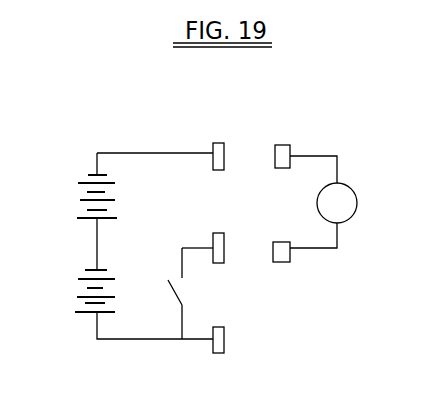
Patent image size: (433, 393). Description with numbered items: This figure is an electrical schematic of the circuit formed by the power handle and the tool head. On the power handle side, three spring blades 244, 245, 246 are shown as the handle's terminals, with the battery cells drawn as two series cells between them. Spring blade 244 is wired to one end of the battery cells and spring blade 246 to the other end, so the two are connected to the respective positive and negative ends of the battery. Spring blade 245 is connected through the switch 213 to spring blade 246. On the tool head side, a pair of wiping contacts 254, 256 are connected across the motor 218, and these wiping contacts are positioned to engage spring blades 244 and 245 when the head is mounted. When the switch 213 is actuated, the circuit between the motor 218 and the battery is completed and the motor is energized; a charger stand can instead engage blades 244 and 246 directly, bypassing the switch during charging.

The switch 213 is at (167, 292).
The motor 218 is at (355, 192).
The spring blade 244 is at (216, 141).
The spring blade 245 is at (219, 229).
The spring blade 246 is at (210, 343).
The wiping contact 254 is at (280, 143).
The wiping contact 256 is at (291, 263).